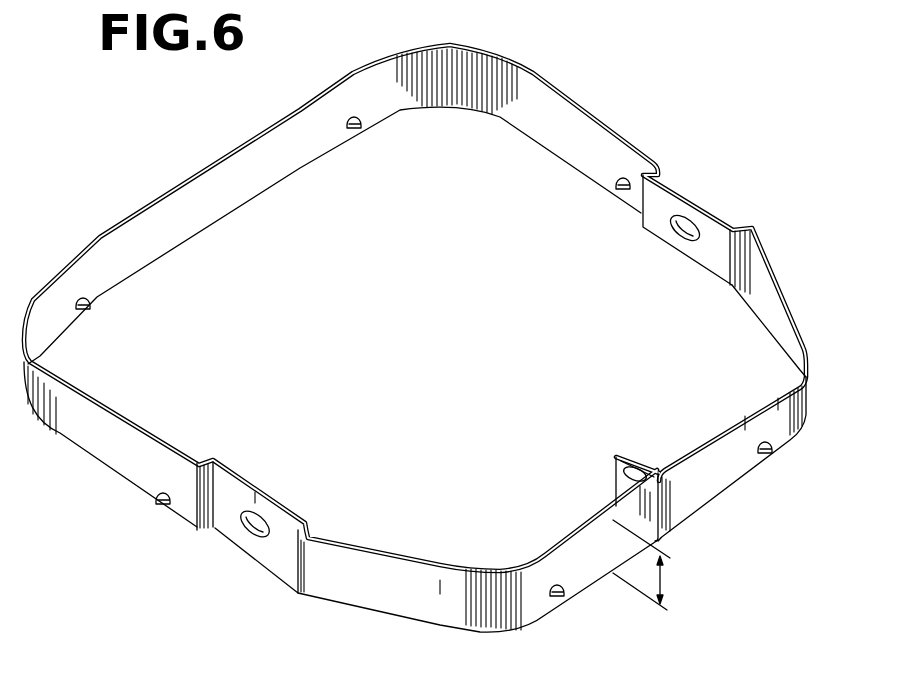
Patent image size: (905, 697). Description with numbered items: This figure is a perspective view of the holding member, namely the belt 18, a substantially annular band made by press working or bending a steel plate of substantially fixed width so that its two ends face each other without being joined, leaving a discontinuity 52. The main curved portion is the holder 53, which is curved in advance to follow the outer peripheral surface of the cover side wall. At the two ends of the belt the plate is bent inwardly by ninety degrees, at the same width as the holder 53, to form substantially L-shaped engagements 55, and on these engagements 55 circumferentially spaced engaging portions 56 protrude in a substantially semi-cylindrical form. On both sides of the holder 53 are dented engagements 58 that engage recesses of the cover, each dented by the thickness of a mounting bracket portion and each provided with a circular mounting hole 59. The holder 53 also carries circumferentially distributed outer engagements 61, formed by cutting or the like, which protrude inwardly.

The belt 18 is at (407, 362).
The discontinuity 52 is at (675, 547).
The holder 53 is at (100, 443).
The engagements 55 is at (620, 487).
The engaging portions 56 is at (660, 470).
The engagements 58 is at (657, 223).
The mounting hole 59 is at (688, 235).
The outer engagements 61 is at (92, 311).